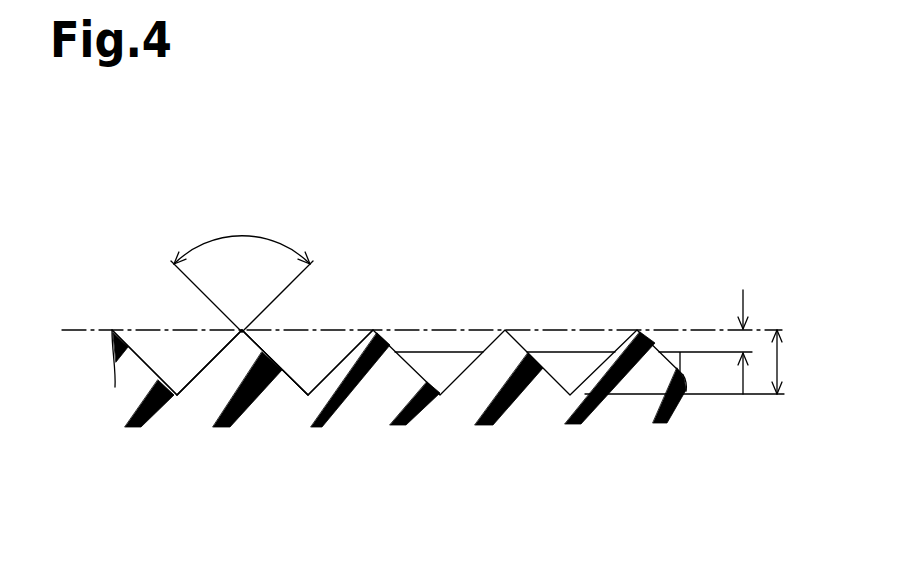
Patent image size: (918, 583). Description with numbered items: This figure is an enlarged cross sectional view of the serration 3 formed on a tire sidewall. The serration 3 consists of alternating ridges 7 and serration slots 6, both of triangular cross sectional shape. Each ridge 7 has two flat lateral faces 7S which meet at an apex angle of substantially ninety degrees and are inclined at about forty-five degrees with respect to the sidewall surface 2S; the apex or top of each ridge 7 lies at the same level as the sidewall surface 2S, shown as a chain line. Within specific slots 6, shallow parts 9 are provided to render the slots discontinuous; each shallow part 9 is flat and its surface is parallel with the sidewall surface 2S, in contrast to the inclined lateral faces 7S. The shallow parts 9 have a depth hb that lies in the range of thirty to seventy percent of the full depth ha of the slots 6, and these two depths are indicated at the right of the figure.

The sidewall surface 2S is at (132, 330).
The serration 3 is at (350, 313).
The serration slot 6 is at (178, 372).
The ridge 7 is at (388, 336).
The lateral face 7S is at (207, 362).
The shallow part 9 is at (440, 352).
The depth of the shallow part hb is at (743, 337).
The depth of the slot ha is at (777, 357).